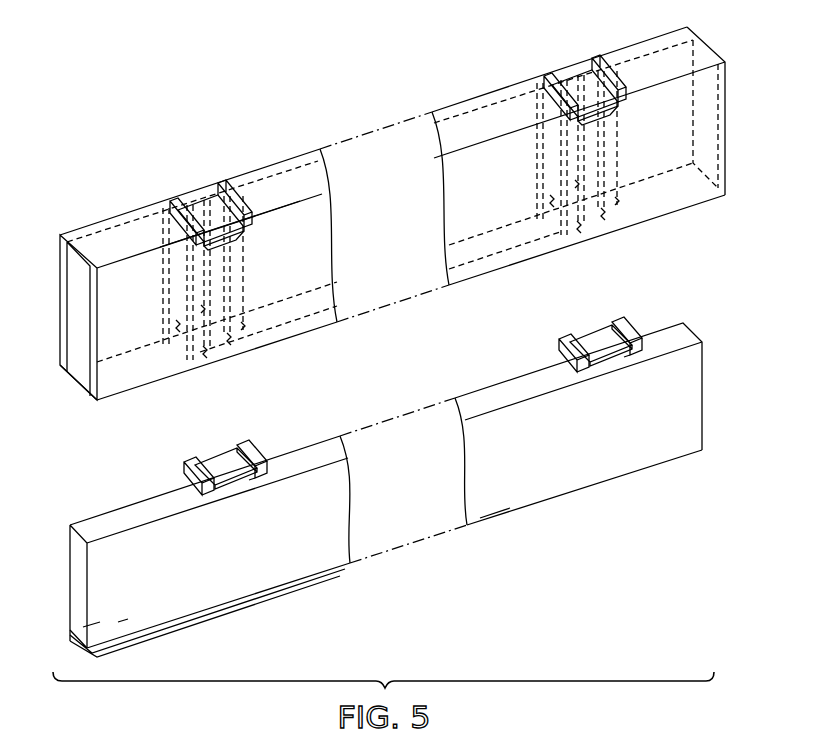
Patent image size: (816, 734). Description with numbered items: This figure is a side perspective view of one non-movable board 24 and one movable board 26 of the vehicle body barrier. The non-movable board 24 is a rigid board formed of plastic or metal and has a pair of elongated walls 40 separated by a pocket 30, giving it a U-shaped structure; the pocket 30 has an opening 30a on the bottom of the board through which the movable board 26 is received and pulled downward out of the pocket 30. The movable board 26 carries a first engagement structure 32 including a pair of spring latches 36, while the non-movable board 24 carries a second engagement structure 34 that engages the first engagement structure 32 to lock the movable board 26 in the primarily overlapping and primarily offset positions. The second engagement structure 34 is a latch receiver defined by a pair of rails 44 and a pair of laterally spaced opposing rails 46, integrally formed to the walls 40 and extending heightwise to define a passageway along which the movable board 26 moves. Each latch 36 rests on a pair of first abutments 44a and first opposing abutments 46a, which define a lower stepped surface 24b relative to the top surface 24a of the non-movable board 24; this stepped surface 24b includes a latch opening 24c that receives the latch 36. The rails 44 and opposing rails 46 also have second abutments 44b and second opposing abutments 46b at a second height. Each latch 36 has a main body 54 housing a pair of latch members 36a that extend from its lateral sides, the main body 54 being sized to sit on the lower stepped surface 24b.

The non-movable board 24 is at (394, 236).
The top surface 24a is at (283, 186).
The lower stepped surface 24b is at (236, 240).
The latch opening 24c is at (200, 214).
The movable board 26 is at (724, 374).
The pocket 30 is at (57, 340).
The opening 30a is at (82, 369).
The first engagement structure 32 is at (403, 426).
The second engagement structure 34 is at (398, 209).
The spring latch 36 is at (403, 430).
The latch members 36a is at (185, 468).
The elongated walls 40 is at (78, 367).
The rails 44 is at (346, 242).
The first abutments 44a is at (197, 235).
The second abutments 44b is at (210, 355).
The opposing rails 46 is at (447, 227).
The first opposing abutments 46a is at (234, 222).
The second opposing abutments 46b is at (229, 347).
The main body 54 is at (221, 466).